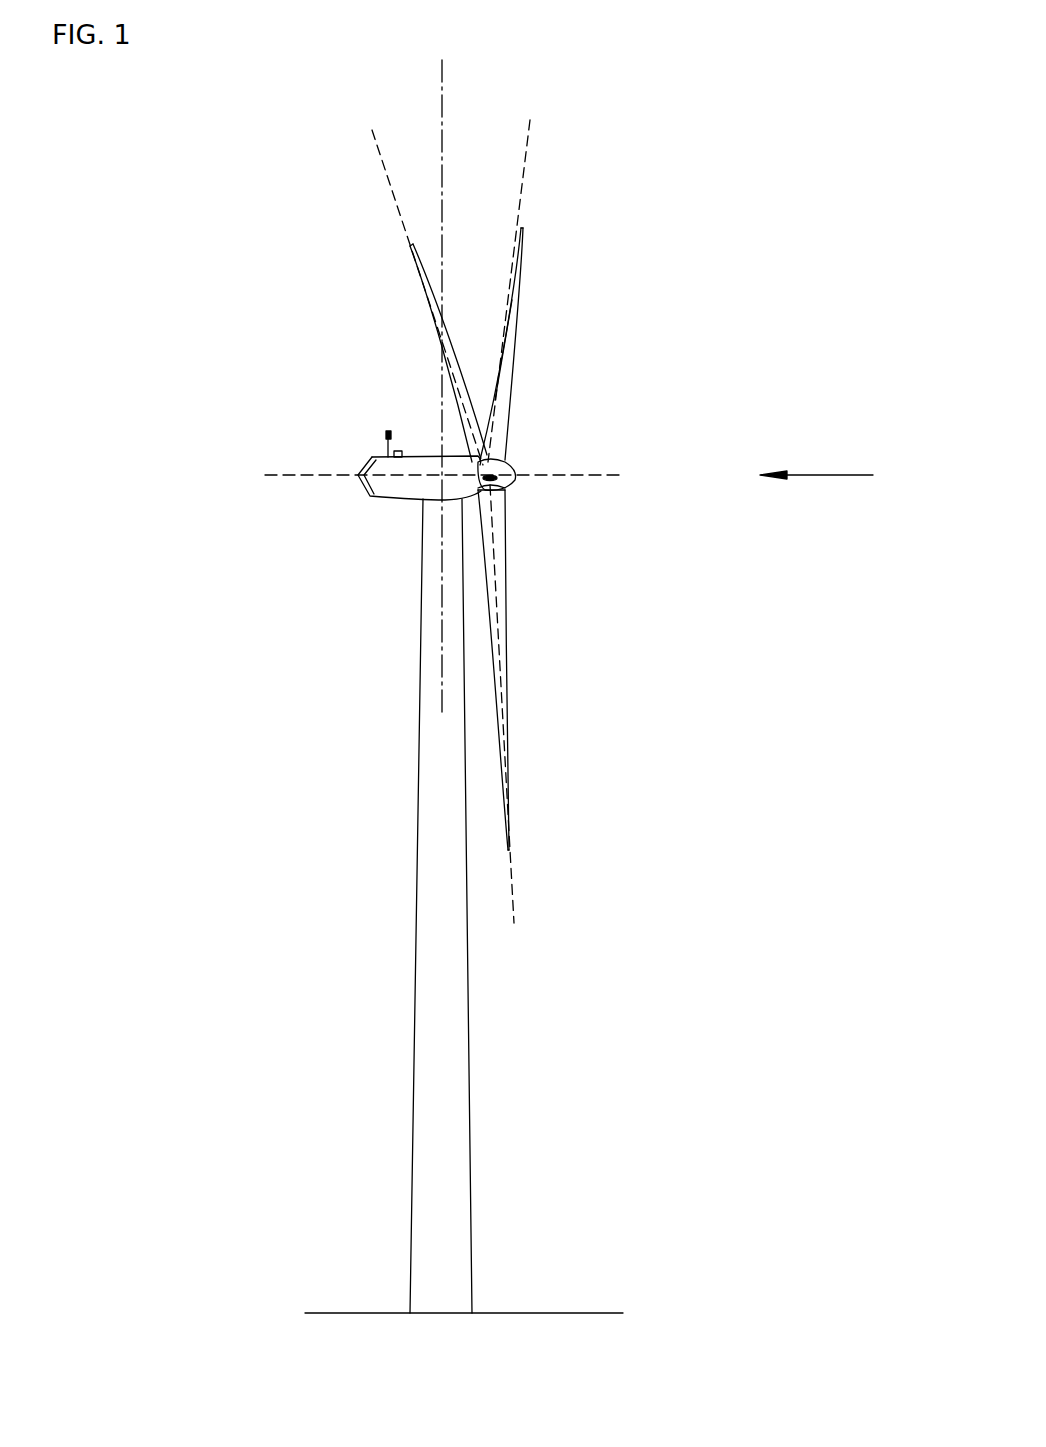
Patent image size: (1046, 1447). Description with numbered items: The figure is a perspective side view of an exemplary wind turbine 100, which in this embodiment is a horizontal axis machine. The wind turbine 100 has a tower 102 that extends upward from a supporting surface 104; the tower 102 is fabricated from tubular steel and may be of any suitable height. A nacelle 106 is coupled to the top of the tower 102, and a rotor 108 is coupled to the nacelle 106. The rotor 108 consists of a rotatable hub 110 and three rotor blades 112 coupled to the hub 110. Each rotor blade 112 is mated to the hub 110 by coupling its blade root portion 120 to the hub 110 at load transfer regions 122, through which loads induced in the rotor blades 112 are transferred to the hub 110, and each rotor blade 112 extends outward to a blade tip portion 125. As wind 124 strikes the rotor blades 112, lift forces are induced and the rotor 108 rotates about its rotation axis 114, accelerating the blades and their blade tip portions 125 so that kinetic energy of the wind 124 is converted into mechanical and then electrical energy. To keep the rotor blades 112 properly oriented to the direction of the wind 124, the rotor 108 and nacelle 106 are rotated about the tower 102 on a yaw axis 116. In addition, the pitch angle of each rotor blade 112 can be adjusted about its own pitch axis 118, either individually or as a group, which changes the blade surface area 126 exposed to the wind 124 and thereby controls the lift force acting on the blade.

The wind turbine 100 is at (187, 253).
The tower 102 is at (414, 1071).
The supporting surface 104 is at (366, 1313).
The nacelle 106 is at (393, 498).
The rotor 108 is at (522, 373).
The rotatable hub 110 is at (515, 472).
The rotor blade 112 is at (437, 322).
The rotation axis 114 is at (590, 478).
The yaw axis 116 is at (442, 83).
The pitch axis 118 is at (378, 150).
The blade root portion 120 is at (502, 555).
The load transfer region 122 is at (497, 498).
The wind 124 is at (840, 475).
The blade tip portion 125 is at (414, 248).
The blade surface area 126 is at (510, 425).